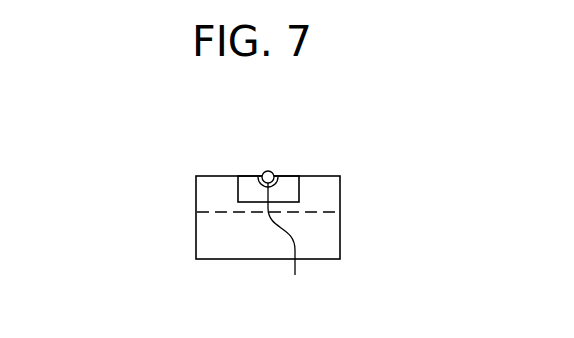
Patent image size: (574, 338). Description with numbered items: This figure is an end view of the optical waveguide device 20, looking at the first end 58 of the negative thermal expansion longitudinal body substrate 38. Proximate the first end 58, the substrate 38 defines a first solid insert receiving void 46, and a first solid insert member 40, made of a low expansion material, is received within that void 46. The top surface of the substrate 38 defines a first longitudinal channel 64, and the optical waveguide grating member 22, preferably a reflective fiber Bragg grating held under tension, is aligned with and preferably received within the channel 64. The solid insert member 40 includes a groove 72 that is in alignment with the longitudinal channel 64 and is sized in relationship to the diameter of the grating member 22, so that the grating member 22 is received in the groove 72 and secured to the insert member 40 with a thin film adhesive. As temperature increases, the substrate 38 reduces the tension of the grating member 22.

The optical waveguide device 20 is at (113, 153).
The optical waveguide grating member 22 is at (269, 170).
The negative thermal expansion longitudinal body substrate 38 is at (341, 232).
The first solid insert member 40 is at (233, 193).
The first solid insert receiving void 46 is at (324, 205).
The first end 58 is at (249, 252).
The first longitudinal channel 64 is at (241, 151).
The groove 72 is at (284, 242).